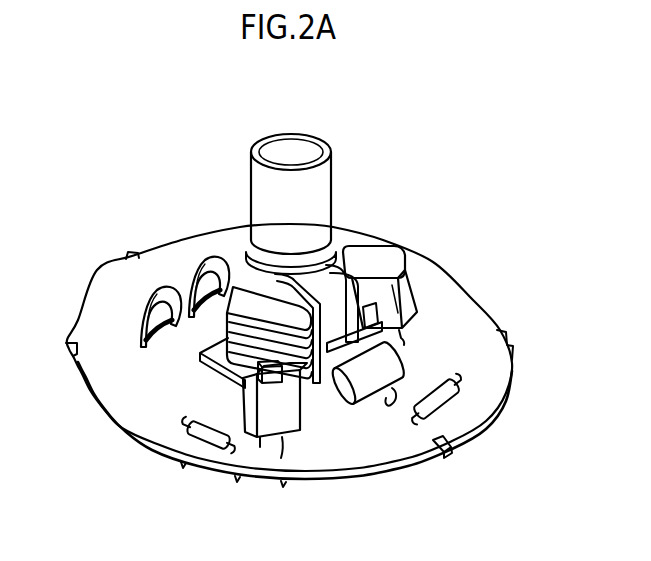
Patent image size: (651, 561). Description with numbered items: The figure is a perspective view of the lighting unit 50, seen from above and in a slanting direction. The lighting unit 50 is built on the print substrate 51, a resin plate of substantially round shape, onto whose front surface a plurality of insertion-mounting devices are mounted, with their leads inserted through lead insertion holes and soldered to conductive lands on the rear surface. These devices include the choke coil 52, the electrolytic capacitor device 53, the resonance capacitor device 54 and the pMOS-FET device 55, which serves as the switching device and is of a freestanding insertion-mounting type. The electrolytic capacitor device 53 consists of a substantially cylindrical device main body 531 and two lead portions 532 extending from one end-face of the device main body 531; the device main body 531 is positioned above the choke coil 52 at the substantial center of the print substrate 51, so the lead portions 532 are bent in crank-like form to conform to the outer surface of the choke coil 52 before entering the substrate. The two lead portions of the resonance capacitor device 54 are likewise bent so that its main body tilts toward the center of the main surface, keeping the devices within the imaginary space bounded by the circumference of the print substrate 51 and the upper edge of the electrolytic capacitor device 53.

The lighting unit 50 is at (388, 78).
The print substrate 51 is at (476, 340).
The choke coil 52 is at (212, 355).
The electrolytic capacitor device 53 is at (457, 133).
The device main body 531 is at (318, 192).
The lead portions 532 is at (322, 303).
The resonance capacitor device 54 is at (410, 302).
The pMOS-FET device 55 is at (277, 420).